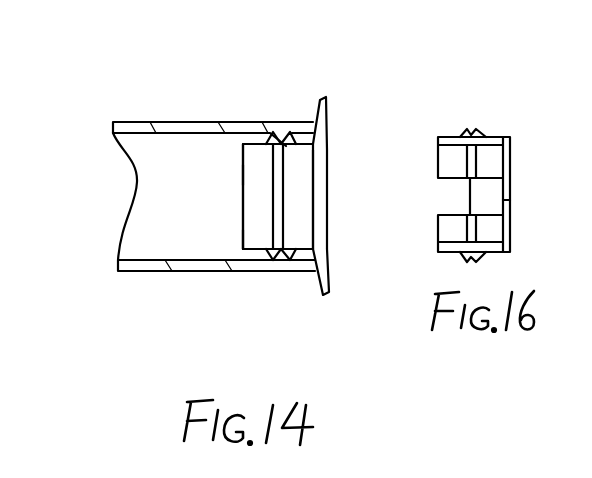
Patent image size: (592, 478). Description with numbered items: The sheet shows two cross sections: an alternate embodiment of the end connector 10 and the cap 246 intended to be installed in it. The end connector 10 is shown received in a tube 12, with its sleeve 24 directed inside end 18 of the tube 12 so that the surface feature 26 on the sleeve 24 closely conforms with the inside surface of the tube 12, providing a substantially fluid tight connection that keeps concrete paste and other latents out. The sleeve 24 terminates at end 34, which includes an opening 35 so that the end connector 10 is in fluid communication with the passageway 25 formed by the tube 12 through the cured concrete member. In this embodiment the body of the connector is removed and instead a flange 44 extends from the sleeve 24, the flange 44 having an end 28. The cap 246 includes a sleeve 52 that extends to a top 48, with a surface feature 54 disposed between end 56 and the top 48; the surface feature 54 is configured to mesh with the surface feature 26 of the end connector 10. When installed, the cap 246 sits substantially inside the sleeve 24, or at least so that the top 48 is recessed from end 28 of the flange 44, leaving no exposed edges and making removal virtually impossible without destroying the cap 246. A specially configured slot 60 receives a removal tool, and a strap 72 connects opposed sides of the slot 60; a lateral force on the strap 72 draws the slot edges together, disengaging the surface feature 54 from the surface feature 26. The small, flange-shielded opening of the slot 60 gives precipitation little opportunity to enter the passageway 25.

In FIG. 14, the end connector 10 is at (331, 118).
In FIG. 14, the tube 12 is at (170, 122).
In FIG. 14, the end of tube 18 is at (309, 120).
In FIG. 14, the sleeve 24 is at (258, 130).
In FIG. 14, the passageway 25 is at (140, 209).
In FIG. 14, the surface feature 26 is at (280, 272).
In FIG. 14, the end of flange 28 is at (331, 157).
In FIG. 14, the end of sleeve 34 is at (240, 246).
In FIG. 14, the opening 35 is at (240, 177).
In FIG. 14, the flange 44 is at (324, 286).
In FIG. 16, the top 48 is at (508, 158).
In FIG. 16, the sleeve 52 is at (450, 136).
In FIG. 16, the surface feature 54 is at (470, 130).
In FIG. 16, the end of cap 56 is at (441, 252).
In FIG. 16, the slot 60 is at (458, 194).
In FIG. 16, the strap 72 is at (478, 197).
In FIG. 16, the cap 246 is at (513, 238).